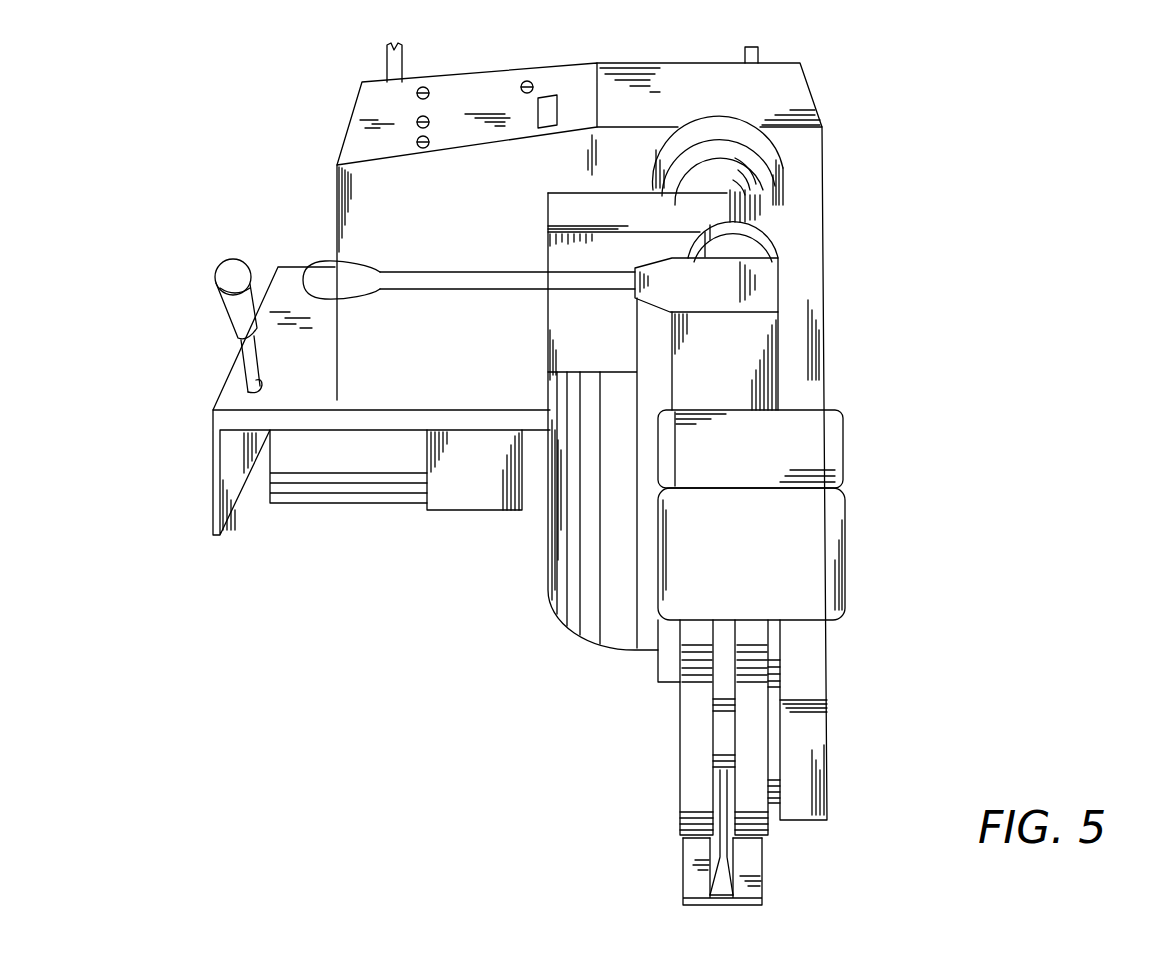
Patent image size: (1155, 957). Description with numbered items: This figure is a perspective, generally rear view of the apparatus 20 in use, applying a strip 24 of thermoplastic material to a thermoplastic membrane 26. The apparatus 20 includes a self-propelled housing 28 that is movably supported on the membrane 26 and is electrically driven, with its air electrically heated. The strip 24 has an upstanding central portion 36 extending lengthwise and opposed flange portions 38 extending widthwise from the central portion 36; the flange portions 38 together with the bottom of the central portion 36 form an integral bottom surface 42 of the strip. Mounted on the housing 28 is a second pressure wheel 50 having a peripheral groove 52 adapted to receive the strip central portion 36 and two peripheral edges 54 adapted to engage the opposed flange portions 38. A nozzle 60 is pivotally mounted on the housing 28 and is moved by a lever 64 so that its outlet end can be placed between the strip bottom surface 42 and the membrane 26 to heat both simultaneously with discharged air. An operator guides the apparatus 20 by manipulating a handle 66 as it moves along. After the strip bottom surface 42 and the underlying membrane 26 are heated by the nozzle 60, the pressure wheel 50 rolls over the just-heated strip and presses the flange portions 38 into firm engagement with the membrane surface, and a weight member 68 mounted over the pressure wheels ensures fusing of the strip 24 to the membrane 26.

The apparatus 20 is at (259, 163).
The strip 24 is at (757, 883).
The thermoplastic membrane 26 is at (514, 775).
The self-propelled housing 28 is at (808, 243).
The central portion 36 is at (712, 848).
The flange portions 38 is at (680, 867).
The bottom surface 42 is at (720, 903).
The second pressure wheel 50 is at (687, 695).
The peripheral groove 52 is at (723, 730).
The peripheral edges 54 is at (747, 770).
The nozzle 60 is at (573, 525).
The lever 64 is at (470, 272).
The handle 66 is at (398, 65).
The weight member 68 is at (803, 458).